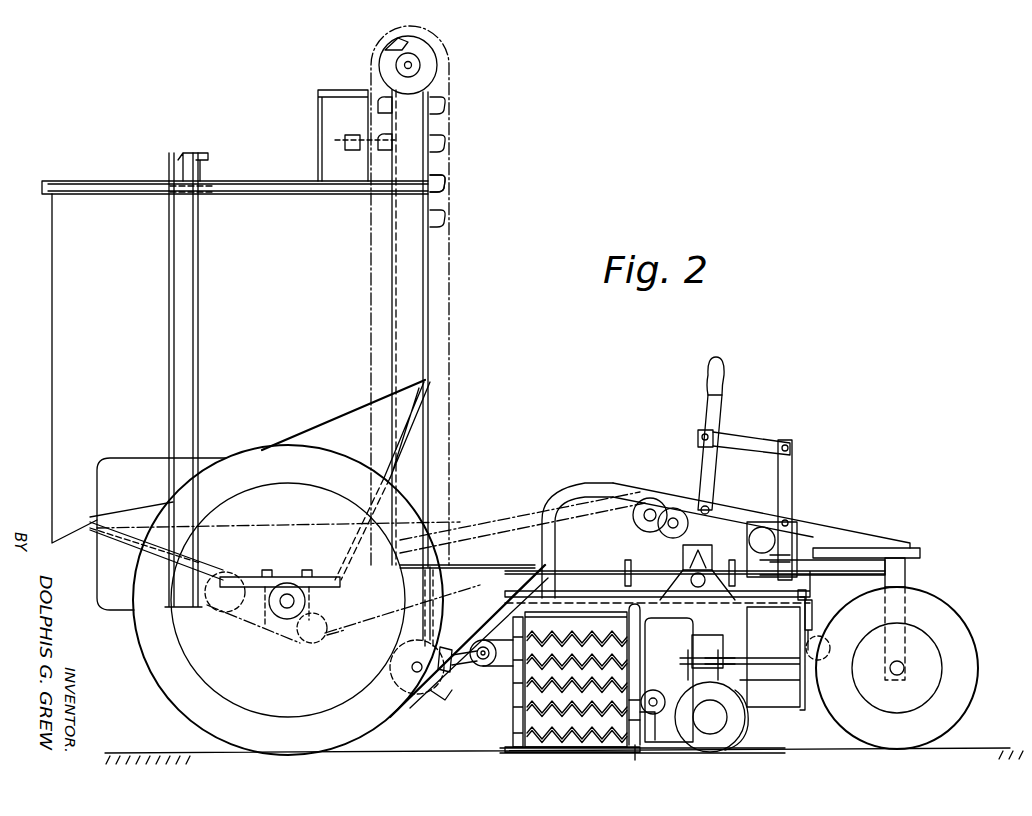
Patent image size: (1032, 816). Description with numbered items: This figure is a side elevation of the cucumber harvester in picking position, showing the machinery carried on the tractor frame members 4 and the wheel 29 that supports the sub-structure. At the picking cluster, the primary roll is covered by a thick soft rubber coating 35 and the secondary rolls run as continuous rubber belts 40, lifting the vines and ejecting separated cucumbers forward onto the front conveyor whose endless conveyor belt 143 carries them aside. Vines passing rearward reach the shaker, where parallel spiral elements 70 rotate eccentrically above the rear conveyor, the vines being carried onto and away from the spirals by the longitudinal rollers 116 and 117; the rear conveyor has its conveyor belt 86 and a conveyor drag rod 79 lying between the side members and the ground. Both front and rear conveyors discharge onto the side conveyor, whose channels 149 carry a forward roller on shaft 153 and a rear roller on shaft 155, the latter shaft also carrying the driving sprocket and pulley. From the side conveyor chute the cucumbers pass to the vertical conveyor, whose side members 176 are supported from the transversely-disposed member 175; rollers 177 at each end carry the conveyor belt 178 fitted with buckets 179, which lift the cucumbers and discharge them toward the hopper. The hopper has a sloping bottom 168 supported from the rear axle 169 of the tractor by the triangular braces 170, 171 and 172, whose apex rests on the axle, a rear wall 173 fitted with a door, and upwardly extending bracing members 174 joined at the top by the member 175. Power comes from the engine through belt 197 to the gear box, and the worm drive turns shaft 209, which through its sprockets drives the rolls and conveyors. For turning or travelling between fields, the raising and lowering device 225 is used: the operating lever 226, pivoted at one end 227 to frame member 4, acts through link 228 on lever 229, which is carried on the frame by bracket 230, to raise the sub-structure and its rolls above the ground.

The tractor frame members 4 is at (606, 480).
The wheel 29 is at (708, 752).
The soft rubber coating 35 is at (740, 742).
The continuous outer cover or belt 40 is at (668, 752).
The spiral or helical elements 70 is at (562, 638).
The conveyor drag rod 79 is at (508, 760).
The conveyor belt 86 is at (558, 618).
The rollers 116 is at (641, 666).
The rollers 117 is at (512, 722).
The endless conveyor belt 143 is at (785, 652).
The channels 149 is at (488, 668).
The shaft 153 is at (814, 620).
The shaft 155 is at (445, 680).
The sloping bottom 168 is at (300, 433).
The rear axle 169 is at (262, 632).
The brace 170 is at (398, 440).
The roller 171 is at (215, 558).
The brace 172 is at (288, 572).
The rear wall 173 is at (52, 350).
The bracing members 174 is at (200, 378).
The transversely-disposed member 175 is at (208, 153).
The side members 176 is at (418, 474).
The rollers 177 is at (418, 58).
The conveyor belt 178 is at (430, 305).
The buckets 179 is at (444, 184).
The belt 197 is at (475, 522).
The shaft 209 is at (640, 572).
The raising and lowering device 225 is at (728, 417).
The operating lever 226 is at (706, 398).
The pivot end 227 is at (714, 510).
The link 228 is at (758, 440).
The lever 229 is at (793, 489).
The bracket 230 is at (795, 522).